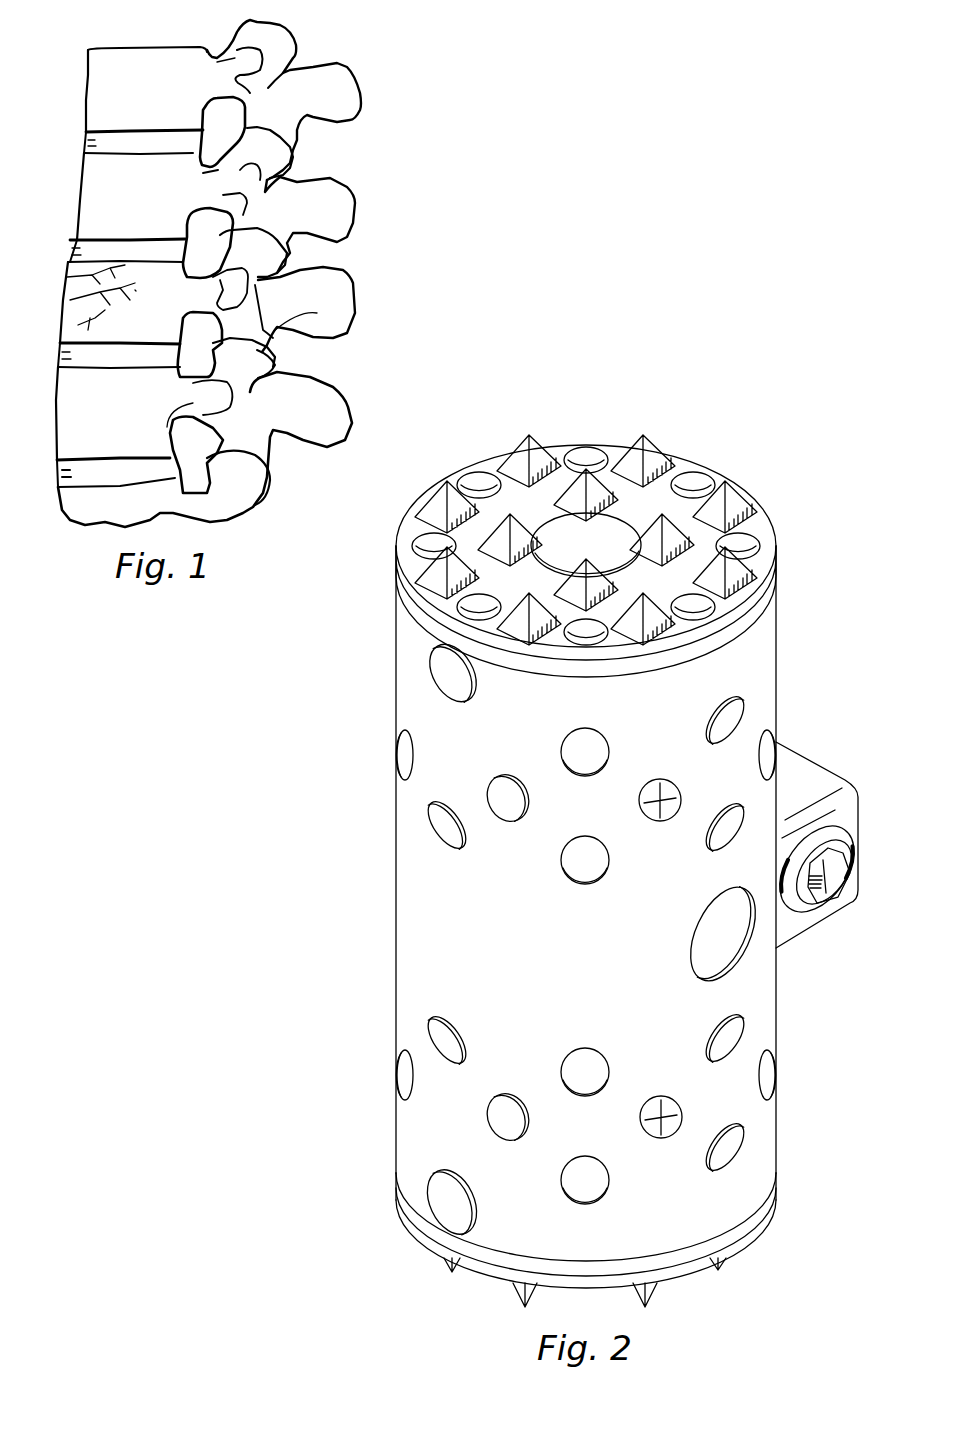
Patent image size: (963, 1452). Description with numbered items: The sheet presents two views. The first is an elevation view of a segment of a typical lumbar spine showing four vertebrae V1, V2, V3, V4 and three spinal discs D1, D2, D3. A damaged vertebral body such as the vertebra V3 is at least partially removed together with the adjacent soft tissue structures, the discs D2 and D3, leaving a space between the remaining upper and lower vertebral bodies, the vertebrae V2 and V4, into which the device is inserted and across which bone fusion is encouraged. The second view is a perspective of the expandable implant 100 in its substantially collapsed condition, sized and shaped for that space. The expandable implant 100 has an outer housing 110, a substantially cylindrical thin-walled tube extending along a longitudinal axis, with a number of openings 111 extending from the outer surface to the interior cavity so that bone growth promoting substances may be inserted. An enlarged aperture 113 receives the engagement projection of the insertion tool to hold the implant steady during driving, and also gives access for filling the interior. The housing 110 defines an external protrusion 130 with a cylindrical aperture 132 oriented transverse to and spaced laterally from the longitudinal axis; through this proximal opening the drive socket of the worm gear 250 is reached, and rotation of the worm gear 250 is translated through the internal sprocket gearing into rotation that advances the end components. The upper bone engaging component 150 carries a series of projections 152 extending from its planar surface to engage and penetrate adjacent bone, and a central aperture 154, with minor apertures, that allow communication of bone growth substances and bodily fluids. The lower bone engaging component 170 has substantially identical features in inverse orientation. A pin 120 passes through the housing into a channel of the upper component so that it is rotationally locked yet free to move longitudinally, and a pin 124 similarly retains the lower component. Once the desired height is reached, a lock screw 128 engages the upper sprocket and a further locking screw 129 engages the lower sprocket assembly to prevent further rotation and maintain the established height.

In FIG. 1, the vertebra V1 is at (88, 82).
In FIG. 1, the vertebra V2 is at (82, 187).
In FIG. 1, the vertebra V3 is at (65, 300).
In FIG. 1, the vertebra V4 is at (60, 415).
In FIG. 1, the spinal disc D1 is at (83, 140).
In FIG. 1, the disc D2 is at (68, 247).
In FIG. 1, the disc D3 is at (55, 355).
In FIG. 2, the expandable implant 100 is at (567, 844).
In FIG. 2, the outer housing 110 is at (618, 903).
In FIG. 2, the openings 111 is at (432, 840).
In FIG. 2, the enlarged aperture 113 is at (700, 938).
In FIG. 2, the pin 120 is at (448, 700).
In FIG. 2, the pin 124 is at (440, 1182).
In FIG. 2, the lock screw 128 is at (665, 783).
In FIG. 2, the locking screw 129 is at (665, 1100).
In FIG. 2, the external protrusion 130 is at (817, 860).
In FIG. 2, the cylindrical aperture 132 is at (822, 825).
In FIG. 2, the upper bone engaging component 150 is at (606, 529).
In FIG. 2, the projections 152 is at (515, 440).
In FIG. 2, the central aperture 154 is at (604, 548).
In FIG. 2, the lower bone engaging component 170 is at (748, 1230).
In FIG. 2, the worm gear 250 is at (801, 912).